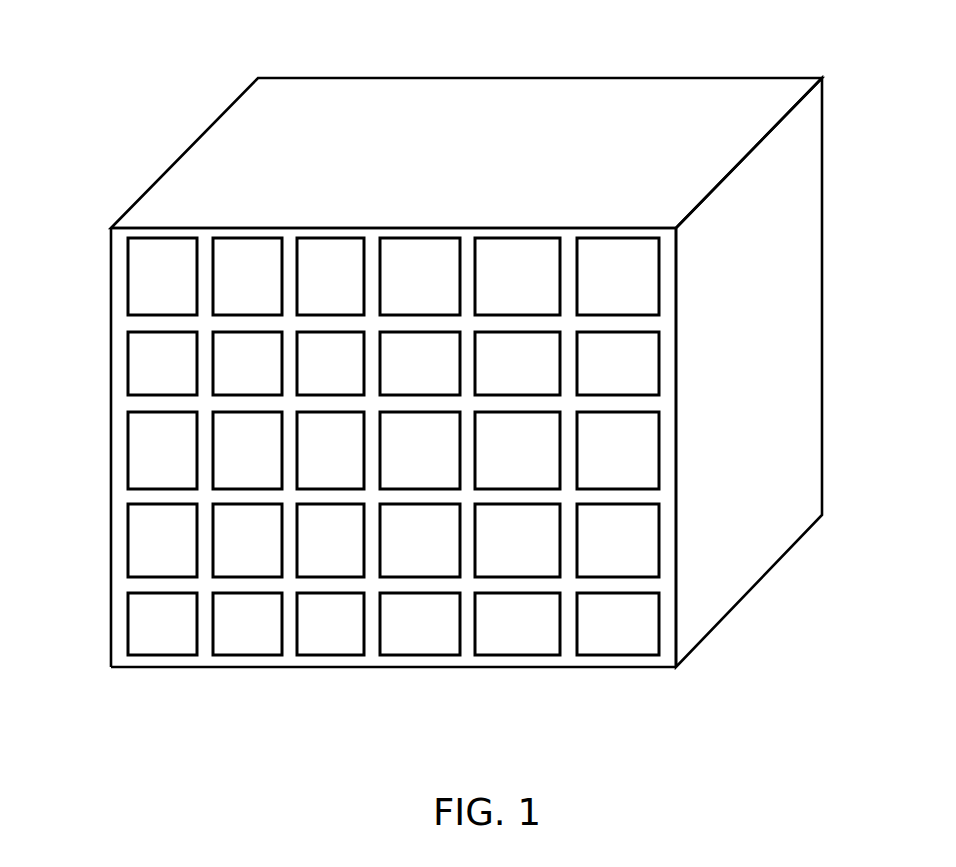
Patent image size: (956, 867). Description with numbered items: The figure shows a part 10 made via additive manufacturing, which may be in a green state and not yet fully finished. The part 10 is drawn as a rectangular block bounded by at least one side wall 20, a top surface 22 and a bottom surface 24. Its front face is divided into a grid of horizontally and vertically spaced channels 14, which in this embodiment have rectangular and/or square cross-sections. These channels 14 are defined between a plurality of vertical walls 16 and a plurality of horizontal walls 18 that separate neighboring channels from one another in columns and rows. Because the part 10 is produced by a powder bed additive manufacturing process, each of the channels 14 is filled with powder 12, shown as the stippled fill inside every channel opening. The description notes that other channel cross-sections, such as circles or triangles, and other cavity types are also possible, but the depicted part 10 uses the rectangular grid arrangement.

The part 10 is at (437, 380).
The powder 12 is at (142, 280).
The horizontally and vertically spaced channels 14 is at (137, 553).
The vertical walls 16 is at (375, 660).
The horizontal walls 18 is at (118, 403).
The side wall 20 is at (765, 548).
The top surface 22 is at (222, 148).
The bottom surface 24 is at (629, 680).